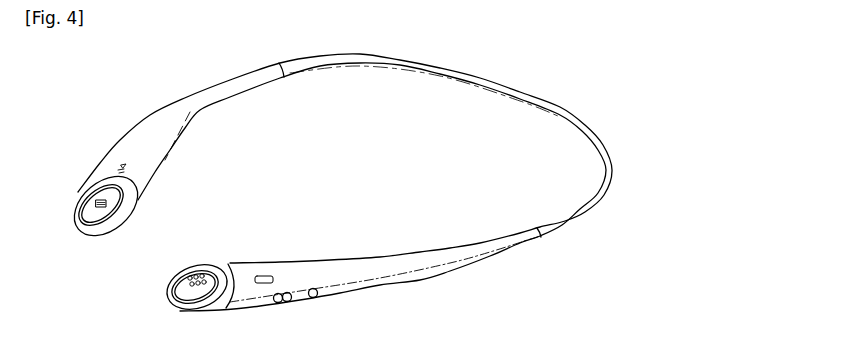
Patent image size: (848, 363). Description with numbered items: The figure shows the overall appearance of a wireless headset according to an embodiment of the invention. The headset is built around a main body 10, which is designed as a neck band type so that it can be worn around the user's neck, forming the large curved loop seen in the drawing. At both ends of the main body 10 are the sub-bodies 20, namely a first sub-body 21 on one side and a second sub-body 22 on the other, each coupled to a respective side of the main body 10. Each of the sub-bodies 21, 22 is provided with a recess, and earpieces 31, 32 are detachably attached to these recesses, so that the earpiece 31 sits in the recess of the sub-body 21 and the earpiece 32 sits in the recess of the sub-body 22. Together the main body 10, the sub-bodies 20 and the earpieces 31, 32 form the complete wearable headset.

The main body 10 is at (478, 246).
The sub-bodies 20 is at (292, 231).
The sub-body 21 is at (117, 200).
The sub-body 22 is at (321, 293).
The earpiece 31 is at (93, 204).
The earpiece 32 is at (195, 297).